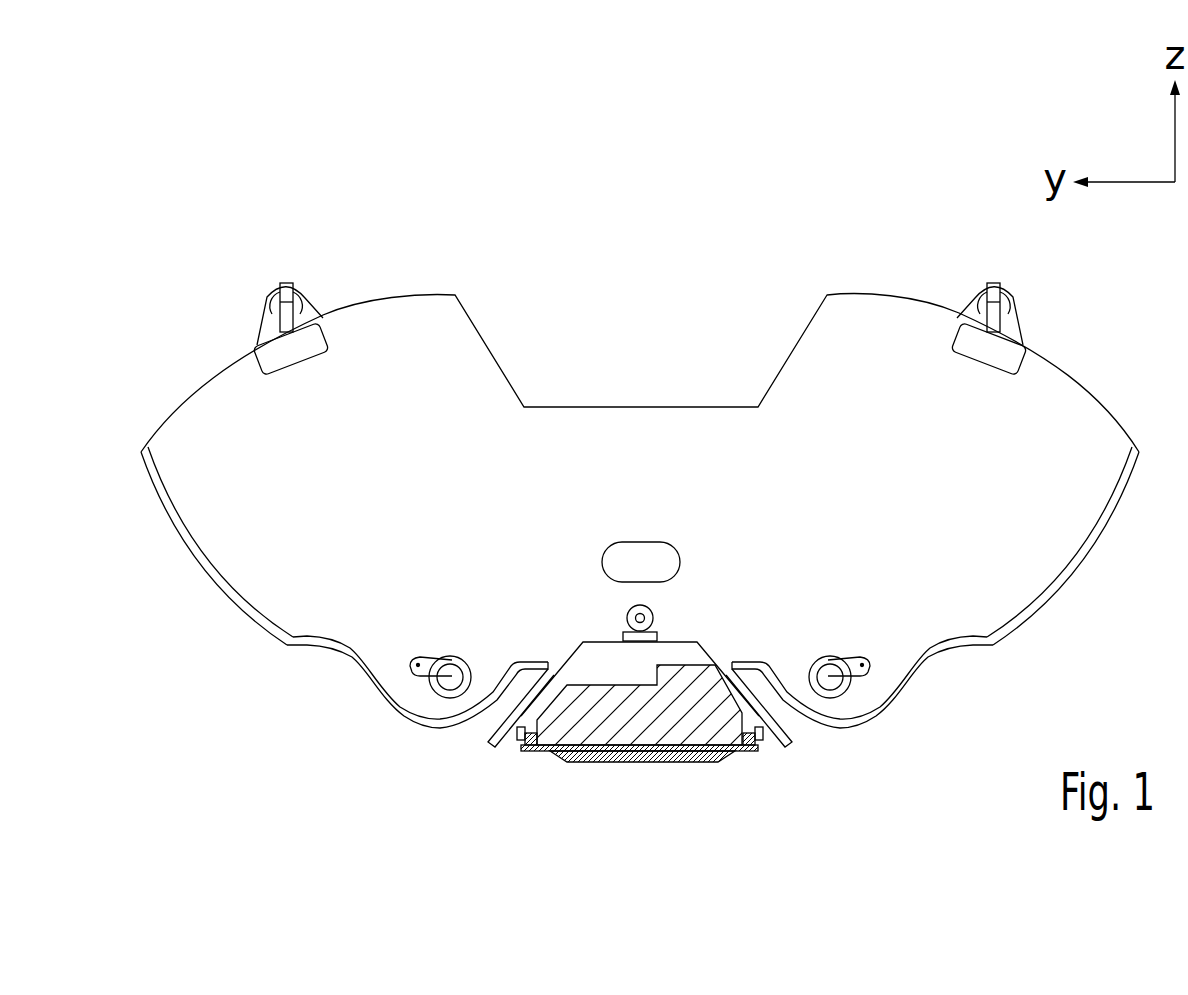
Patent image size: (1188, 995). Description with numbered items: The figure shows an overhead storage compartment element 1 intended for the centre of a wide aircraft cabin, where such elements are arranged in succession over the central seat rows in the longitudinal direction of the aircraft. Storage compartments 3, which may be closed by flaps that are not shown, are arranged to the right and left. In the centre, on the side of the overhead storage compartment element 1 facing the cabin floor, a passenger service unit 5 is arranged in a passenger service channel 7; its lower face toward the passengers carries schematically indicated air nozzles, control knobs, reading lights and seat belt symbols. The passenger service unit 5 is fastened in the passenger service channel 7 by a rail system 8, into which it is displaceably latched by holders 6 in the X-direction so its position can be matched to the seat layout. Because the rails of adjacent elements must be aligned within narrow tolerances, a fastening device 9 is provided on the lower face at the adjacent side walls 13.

The overhead storage compartment element 1 is at (346, 215).
The storage compartment 3 is at (198, 555).
The passenger service unit 5 is at (688, 742).
The holder 6 is at (512, 742).
The passenger service channel 7 is at (608, 670).
The rail system 8 is at (513, 740).
The fastening device 9 is at (657, 633).
The side wall 13 is at (815, 508).